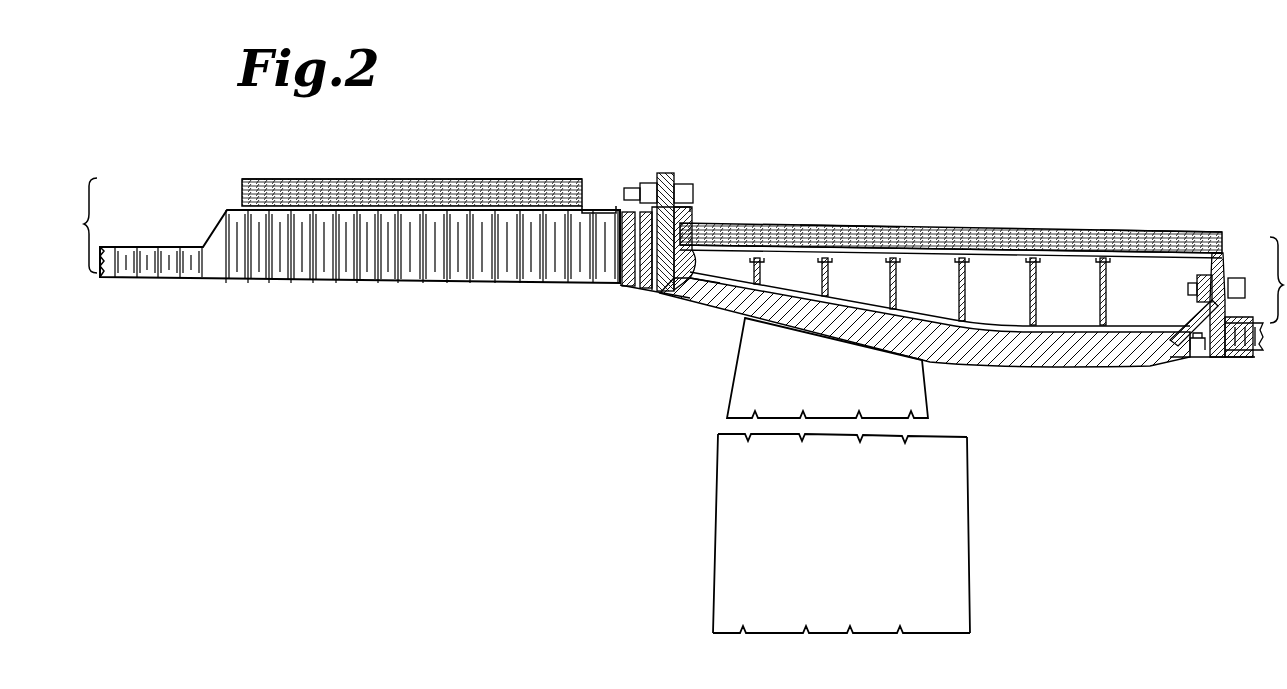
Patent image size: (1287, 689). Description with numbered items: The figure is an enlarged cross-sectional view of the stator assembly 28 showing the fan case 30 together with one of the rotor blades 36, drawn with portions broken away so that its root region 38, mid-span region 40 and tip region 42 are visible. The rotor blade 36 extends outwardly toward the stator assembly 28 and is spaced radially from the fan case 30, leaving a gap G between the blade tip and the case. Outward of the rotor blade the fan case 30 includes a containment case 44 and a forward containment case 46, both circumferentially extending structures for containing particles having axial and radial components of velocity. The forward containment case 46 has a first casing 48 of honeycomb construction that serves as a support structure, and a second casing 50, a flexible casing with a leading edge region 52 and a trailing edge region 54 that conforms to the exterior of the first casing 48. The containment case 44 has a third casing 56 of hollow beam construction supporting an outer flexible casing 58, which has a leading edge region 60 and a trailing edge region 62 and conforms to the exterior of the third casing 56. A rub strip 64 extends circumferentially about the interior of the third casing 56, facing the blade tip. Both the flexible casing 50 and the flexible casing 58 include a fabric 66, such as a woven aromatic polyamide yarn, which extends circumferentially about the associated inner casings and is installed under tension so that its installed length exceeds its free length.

The stator assembly 28 is at (966, 176).
The fan case 30 is at (1153, 229).
The rotor blade 36 is at (705, 528).
The root region 38 is at (854, 626).
The mid-span region 40 is at (854, 469).
The tip region 42 is at (854, 379).
The containment case 44 is at (1227, 297).
The forward containment case 46 is at (93, 225).
The first casing 48 is at (407, 250).
The second casing 50 is at (398, 196).
The leading edge region 52 is at (255, 192).
The trailing edge region 54 is at (568, 200).
The third casing 56 is at (1040, 286).
The flexible casing 58 is at (1000, 231).
The leading edge region 60 is at (690, 236).
The trailing edge region 62 is at (1212, 231).
The rub strip 64 is at (1025, 350).
The fabric 66 is at (490, 182).
The gap G is at (702, 304).